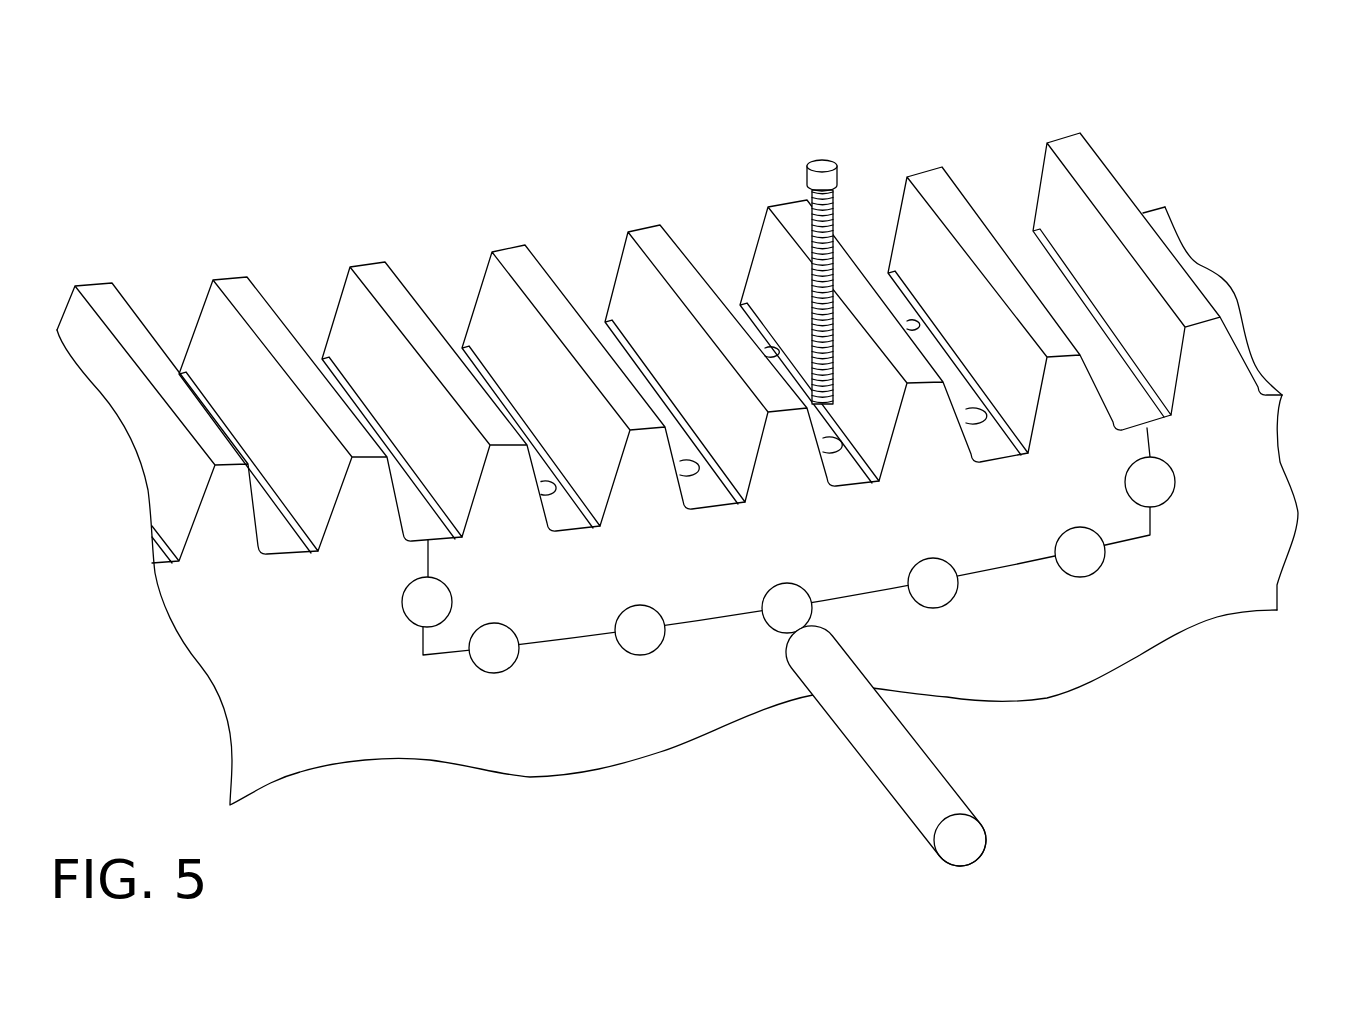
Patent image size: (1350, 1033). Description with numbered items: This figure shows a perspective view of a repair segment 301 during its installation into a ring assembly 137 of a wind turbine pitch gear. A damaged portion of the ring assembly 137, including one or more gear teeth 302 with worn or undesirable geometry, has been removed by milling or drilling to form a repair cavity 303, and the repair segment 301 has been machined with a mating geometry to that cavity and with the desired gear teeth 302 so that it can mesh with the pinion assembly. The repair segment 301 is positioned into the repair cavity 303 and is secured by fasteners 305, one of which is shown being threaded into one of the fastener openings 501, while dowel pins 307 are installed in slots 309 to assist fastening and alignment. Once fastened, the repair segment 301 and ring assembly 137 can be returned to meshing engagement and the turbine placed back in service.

The ring assembly 137 is at (1213, 386).
The repair segment 301 is at (777, 267).
The gear teeth 302 is at (120, 270).
The repair cavity 303 is at (1015, 563).
The fasteners 305 is at (833, 207).
The dowel pins 307 is at (645, 628).
The slots 309 is at (402, 611).
The fastener openings 501 is at (672, 466).